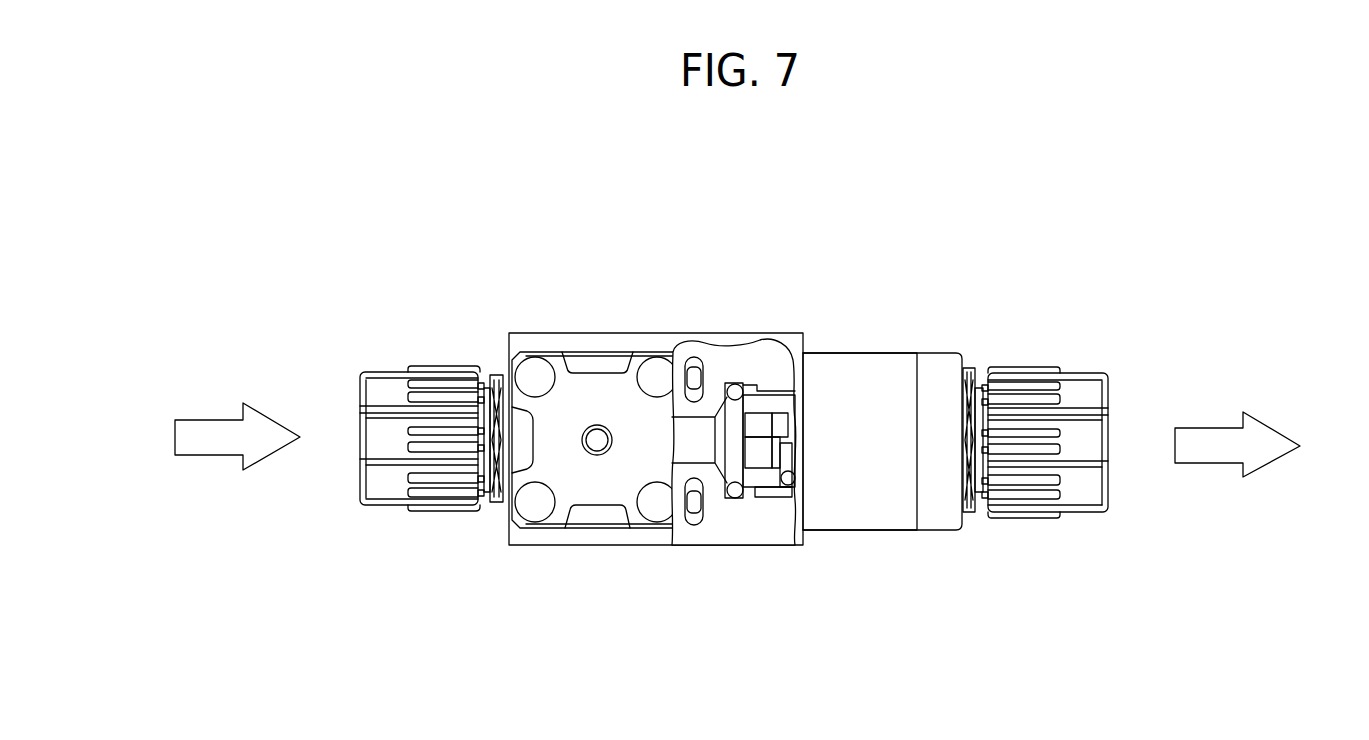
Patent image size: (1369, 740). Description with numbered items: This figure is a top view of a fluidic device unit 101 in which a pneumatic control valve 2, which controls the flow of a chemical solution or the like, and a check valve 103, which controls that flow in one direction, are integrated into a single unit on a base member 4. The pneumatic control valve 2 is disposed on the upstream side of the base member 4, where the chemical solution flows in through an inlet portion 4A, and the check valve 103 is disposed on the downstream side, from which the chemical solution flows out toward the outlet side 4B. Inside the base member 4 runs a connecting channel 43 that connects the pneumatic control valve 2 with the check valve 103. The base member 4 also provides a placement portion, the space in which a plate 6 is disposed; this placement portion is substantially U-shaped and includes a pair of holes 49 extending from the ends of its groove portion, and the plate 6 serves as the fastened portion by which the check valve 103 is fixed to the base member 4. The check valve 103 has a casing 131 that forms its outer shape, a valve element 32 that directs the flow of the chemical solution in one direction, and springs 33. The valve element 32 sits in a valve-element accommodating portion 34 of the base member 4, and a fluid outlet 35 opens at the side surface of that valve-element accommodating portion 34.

The fluidic device unit 101 is at (232, 172).
The pneumatic control valve 2 is at (599, 332).
The base member 4 is at (599, 565).
The inlet portion 4A is at (383, 370).
The outlet connector 4B is at (1080, 372).
The plate 6 is at (705, 512).
The valve element 32 is at (782, 401).
The springs 33 is at (795, 482).
The valve-element accommodating portion 34 is at (797, 452).
The fluid outlet 35 is at (757, 386).
The connecting channel 43 is at (680, 432).
The holes 49 is at (693, 357).
The check valve 103 is at (889, 335).
The casing 131 is at (875, 530).